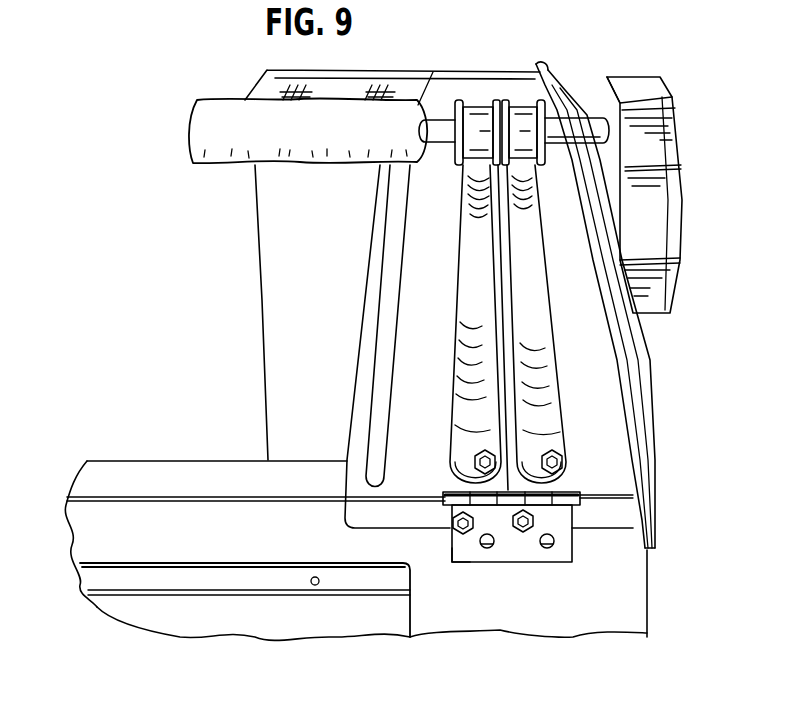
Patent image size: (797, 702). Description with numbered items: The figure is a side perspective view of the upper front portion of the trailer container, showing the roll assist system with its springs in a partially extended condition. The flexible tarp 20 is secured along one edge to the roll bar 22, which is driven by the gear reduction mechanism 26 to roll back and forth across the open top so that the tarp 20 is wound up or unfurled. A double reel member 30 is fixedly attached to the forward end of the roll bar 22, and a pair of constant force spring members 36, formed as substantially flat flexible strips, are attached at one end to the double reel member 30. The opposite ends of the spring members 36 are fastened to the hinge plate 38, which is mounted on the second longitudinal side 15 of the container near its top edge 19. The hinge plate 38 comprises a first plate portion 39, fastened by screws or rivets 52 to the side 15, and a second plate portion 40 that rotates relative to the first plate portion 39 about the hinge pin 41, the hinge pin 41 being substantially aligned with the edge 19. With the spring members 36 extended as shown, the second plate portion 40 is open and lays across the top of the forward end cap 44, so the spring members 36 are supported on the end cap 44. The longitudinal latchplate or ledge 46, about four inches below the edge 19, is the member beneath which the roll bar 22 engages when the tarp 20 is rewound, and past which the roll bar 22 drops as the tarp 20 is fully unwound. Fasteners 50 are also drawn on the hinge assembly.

The second longitudinal side 15 is at (632, 602).
The top edge 19 is at (120, 503).
The tarp 20 is at (341, 142).
The roll bar 22 is at (586, 123).
The gear reduction mechanism 26 is at (667, 235).
The double reel member 30 is at (533, 100).
The constant force spring members 36 is at (487, 313).
The hinge plate 38 is at (447, 498).
The first plate portion 39 is at (447, 552).
The second plate portion 40 is at (572, 570).
The hinge pin 41 is at (580, 503).
The end cap 44 is at (593, 410).
The ledge 46 is at (375, 628).
The bolts 50 is at (490, 458).
The screws or rivets 52 is at (522, 560).